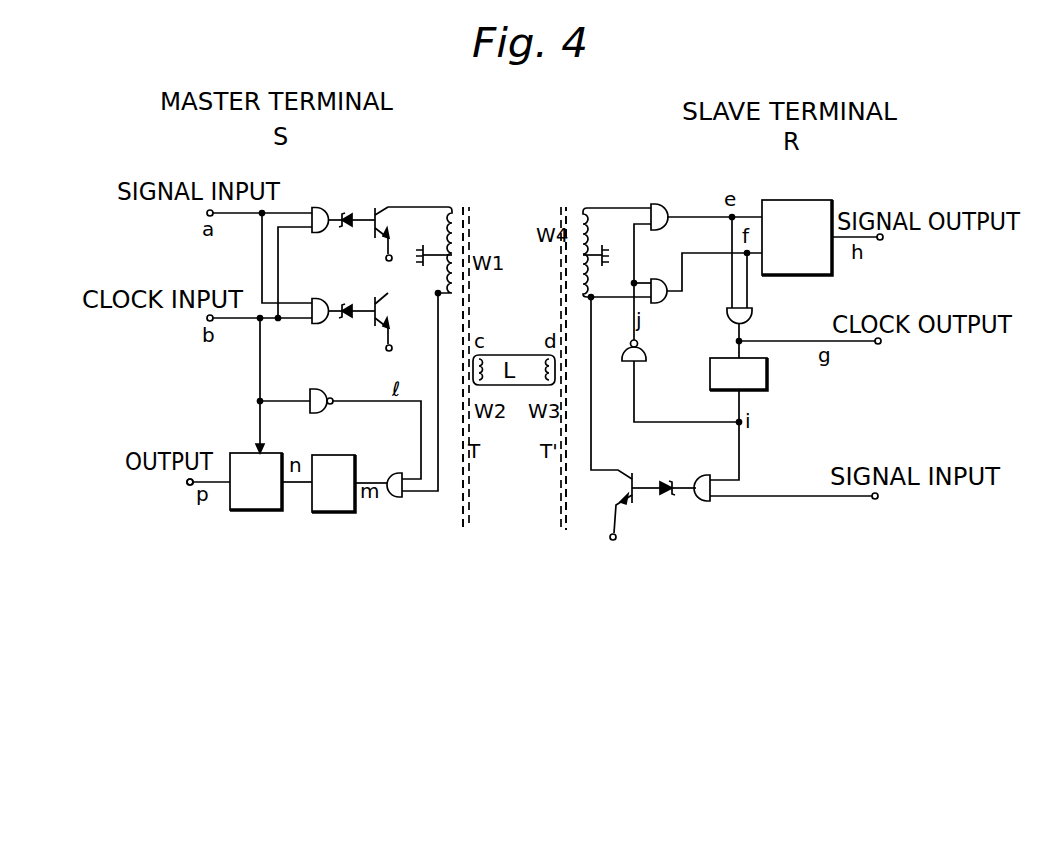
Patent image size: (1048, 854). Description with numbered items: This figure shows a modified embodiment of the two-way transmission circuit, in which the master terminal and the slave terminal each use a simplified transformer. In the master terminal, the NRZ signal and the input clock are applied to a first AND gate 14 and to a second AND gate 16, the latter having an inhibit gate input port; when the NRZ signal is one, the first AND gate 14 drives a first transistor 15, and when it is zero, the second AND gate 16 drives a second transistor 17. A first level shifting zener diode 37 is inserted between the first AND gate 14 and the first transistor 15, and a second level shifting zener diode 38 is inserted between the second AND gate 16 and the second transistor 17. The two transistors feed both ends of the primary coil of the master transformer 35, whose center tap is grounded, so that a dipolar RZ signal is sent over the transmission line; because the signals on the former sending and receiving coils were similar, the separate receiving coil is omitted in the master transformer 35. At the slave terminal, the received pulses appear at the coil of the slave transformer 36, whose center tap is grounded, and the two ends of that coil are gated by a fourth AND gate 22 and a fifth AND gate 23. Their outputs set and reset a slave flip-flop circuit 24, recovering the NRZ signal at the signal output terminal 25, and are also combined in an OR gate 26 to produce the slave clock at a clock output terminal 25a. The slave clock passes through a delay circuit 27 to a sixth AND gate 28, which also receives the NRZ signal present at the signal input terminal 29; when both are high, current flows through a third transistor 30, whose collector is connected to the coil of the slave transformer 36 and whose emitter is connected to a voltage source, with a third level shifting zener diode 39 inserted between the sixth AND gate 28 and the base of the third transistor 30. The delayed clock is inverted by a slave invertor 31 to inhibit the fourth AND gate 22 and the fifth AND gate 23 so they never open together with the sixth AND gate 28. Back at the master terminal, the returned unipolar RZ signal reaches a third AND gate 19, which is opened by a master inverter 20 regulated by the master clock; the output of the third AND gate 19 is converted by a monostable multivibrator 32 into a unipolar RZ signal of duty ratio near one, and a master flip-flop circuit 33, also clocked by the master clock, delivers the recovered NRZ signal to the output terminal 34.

The AND gate A1 14 is at (322, 233).
The transistor TS1 15 is at (391, 213).
The AND gate A2 16 is at (322, 324).
The transistor TS2 17 is at (385, 312).
The AND gate A3 19 is at (398, 497).
The inverter INV 20 is at (322, 391).
The AND gate A4 22 is at (668, 212).
The AND gate A5 23 is at (662, 303).
The flip-flop circuit FF2 24 is at (808, 275).
The signal output terminal 25 is at (882, 240).
The output terminal 25a is at (880, 344).
The OR gate 26 is at (752, 310).
The delay circuit DL 27 is at (767, 390).
The AND gate A6 28 is at (711, 477).
The signal input terminal 29 is at (877, 499).
The transistor TS3 30 is at (622, 506).
The invertor INV' 31 is at (622, 355).
The monostable multivibrator MM 32 is at (343, 512).
The flip-flop circuit FF1 33 is at (265, 510).
The output terminal 34 is at (188, 486).
The transformer T 35 is at (463, 468).
The transformer T' 36 is at (558, 467).
The zener diode Z1 37 is at (350, 212).
The zener diode Z2 38 is at (347, 318).
The zener diode Z3 39 is at (667, 495).